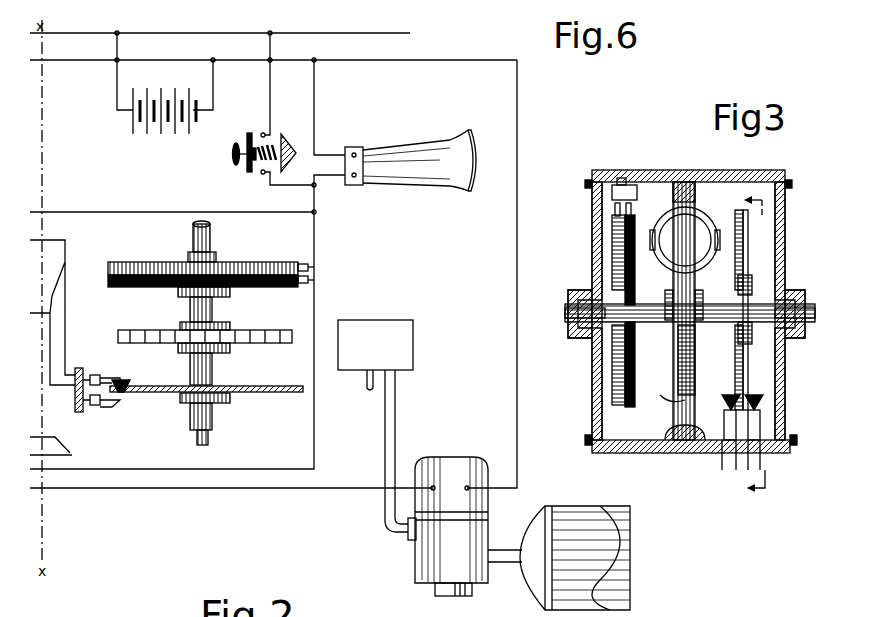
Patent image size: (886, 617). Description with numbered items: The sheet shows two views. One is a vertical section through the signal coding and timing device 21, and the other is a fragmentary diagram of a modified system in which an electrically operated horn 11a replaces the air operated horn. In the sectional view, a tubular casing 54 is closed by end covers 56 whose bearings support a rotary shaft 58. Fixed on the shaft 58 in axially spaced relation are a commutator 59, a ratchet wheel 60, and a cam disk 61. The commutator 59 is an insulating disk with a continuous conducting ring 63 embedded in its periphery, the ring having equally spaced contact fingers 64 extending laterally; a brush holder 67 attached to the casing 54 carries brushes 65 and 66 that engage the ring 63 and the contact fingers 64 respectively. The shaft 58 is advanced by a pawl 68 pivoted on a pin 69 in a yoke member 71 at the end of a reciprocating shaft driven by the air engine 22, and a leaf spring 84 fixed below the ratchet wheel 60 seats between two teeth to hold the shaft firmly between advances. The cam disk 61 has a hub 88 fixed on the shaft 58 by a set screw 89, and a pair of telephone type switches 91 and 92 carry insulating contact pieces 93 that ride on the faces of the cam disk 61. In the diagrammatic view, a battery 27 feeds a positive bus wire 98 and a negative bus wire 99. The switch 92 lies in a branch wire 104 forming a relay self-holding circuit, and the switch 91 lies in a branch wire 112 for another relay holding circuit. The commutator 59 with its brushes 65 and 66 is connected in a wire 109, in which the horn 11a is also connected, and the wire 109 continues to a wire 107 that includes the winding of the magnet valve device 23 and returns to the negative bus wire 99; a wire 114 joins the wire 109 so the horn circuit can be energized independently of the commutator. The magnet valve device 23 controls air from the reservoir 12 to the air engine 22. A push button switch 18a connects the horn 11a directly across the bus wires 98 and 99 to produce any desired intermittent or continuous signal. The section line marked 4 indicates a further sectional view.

In FIG. 6, the positive bus wire 98 is at (196, 43).
In FIG. 6, the negative bus wire 99 is at (224, 60).
In FIG. 6, the battery 27 is at (150, 132).
In FIG. 6, the push button switch 18a is at (237, 141).
In FIG. 6, the wire 109 is at (318, 100).
In FIG. 6, the electrically operated horn 11a is at (452, 146).
In FIG. 6, the wire 107 is at (516, 228).
In FIG. 6, the wire 114 is at (183, 212).
In FIG. 6, the branch wire 112 is at (70, 312).
In FIG. 6, the branch wire 104 is at (70, 451).
In FIG. 6, the signal coding and timing device 21 is at (142, 316).
In FIG. 3, the signal coding and timing device 21 is at (590, 168).
In FIG. 6, the rotary shaft 58 is at (212, 305).
In FIG. 3, the rotary shaft 58 is at (720, 292).
In FIG. 6, the commutator 59 is at (163, 260).
In FIG. 3, the commutator 59 is at (618, 408).
In FIG. 6, the ratchet wheel 60 is at (275, 330).
In FIG. 3, the ratchet wheel 60 is at (680, 340).
In FIG. 6, the cam disk 61 is at (270, 386).
In FIG. 3, the cam disk 61 is at (738, 345).
In FIG. 6, the brush 65 is at (301, 262).
In FIG. 3, the brush 65 is at (614, 210).
In FIG. 6, the brush 66 is at (310, 290).
In FIG. 3, the brush 66 is at (631, 212).
In FIG. 6, the telephone type switch 91 is at (93, 372).
In FIG. 3, the telephone type switch 91 is at (722, 405).
In FIG. 6, the telephone type switch 92 is at (99, 406).
In FIG. 3, the telephone type switch 92 is at (756, 394).
In FIG. 6, the air engine 22 is at (363, 319).
In FIG. 6, the magnet valve device 23 is at (433, 456).
In FIG. 6, the reservoir 12 is at (597, 504).
In FIG. 3, the tubular casing 54 is at (672, 181).
In FIG. 3, the end cover 56 is at (785, 245).
In FIG. 3, the pawl 68 is at (680, 200).
In FIG. 3, the yoke member 71 is at (700, 215).
In FIG. 3, the brush holder 67 is at (620, 184).
In FIG. 3, the conducting ring 63 is at (612, 273).
In FIG. 3, the contact fingers 64 is at (635, 255).
In FIG. 3, the leaf spring 84 is at (664, 396).
In FIG. 3, the pin 69 is at (740, 240).
In FIG. 3, the hub 88 is at (753, 275).
In FIG. 3, the set screw 89 is at (753, 339).
In FIG. 3, the contact piece 93 is at (728, 393).
In FIG. 3, the section line 4 is at (746, 347).